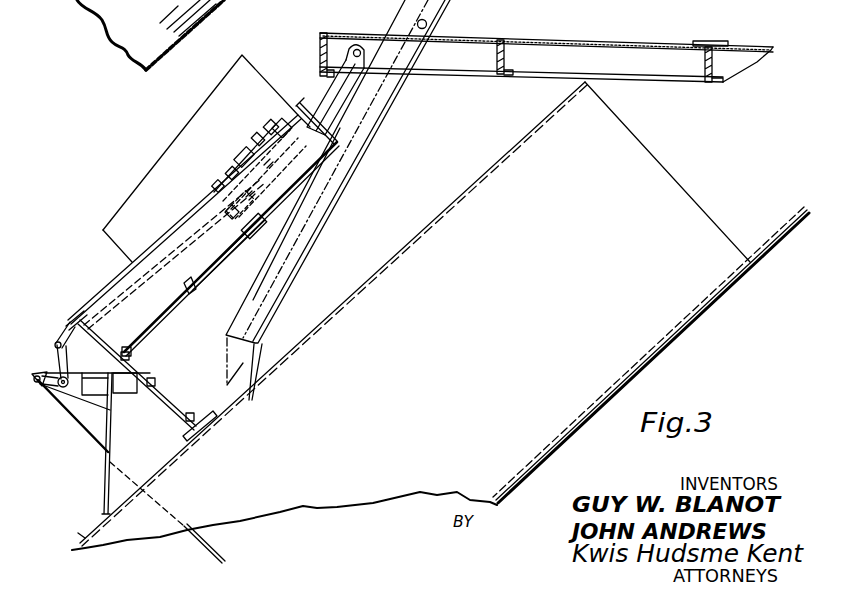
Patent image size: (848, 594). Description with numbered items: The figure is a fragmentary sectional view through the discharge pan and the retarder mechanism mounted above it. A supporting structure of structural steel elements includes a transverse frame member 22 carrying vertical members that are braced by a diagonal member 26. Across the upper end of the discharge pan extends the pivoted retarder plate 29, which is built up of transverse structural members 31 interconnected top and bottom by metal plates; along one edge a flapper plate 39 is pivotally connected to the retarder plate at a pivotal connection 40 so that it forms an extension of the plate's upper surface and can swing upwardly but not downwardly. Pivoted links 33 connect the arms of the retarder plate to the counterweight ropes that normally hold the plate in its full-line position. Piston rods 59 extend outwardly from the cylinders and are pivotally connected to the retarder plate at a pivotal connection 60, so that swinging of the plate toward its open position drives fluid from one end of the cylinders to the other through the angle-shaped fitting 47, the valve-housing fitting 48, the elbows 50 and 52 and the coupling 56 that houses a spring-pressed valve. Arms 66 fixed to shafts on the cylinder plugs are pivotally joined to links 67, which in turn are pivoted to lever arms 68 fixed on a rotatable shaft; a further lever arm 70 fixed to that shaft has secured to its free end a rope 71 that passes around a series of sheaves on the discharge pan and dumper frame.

The frame member 22 is at (176, 403).
The diagonal member 26 is at (112, 438).
The retarder plate 29 is at (579, 45).
The structural members 31 is at (506, 58).
The pivoted links 33 is at (260, 114).
The flapper plate 39 is at (741, 47).
The pivotal connection 40 is at (711, 42).
The angle-shaped fitting 47 is at (217, 182).
The fitting 48 is at (228, 168).
The elbows 50 is at (241, 150).
The elbows 52 is at (271, 121).
The coupling 56 is at (256, 133).
The piston rods 59 is at (322, 107).
The pivotal connection 60 is at (359, 50).
The arms 66 is at (279, 237).
The links 67 is at (178, 213).
The lever arms 68 is at (68, 359).
The lever arm 70 is at (40, 375).
The rope 71 is at (200, 551).